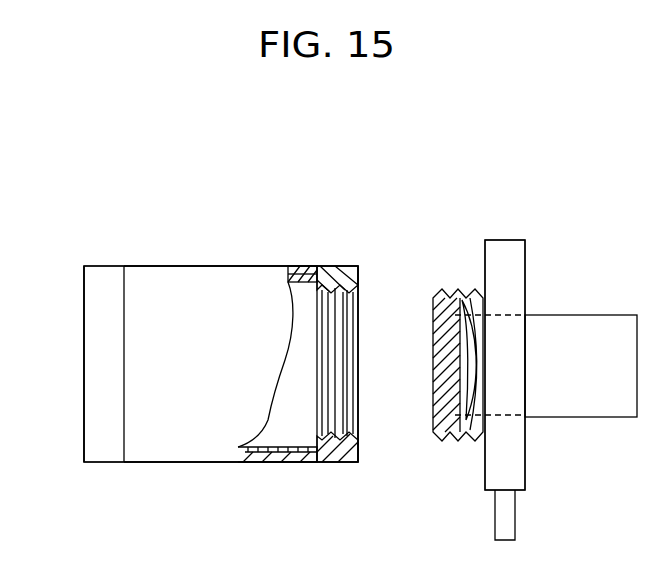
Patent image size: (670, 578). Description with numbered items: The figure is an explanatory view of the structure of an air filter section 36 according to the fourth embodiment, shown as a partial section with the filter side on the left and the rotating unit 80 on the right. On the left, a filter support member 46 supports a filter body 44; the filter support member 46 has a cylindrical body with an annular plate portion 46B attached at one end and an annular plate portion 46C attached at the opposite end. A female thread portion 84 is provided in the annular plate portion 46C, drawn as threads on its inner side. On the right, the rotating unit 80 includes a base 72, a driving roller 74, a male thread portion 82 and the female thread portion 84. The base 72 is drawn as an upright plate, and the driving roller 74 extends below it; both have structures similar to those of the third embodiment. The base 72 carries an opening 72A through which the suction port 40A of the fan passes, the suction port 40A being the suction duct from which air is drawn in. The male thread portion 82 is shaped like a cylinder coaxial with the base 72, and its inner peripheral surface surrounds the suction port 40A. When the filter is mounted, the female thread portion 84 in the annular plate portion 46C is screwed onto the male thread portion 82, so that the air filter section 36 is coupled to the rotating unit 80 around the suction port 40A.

The air filter section 36 is at (283, 186).
The filter body 44 is at (205, 272).
The filter support member 46 is at (84, 352).
The annular plate portion 46B is at (101, 270).
The annular plate portion 46C is at (336, 266).
The female thread portion 84 is at (340, 307).
The rotating unit 80 is at (515, 178).
The base 72 is at (495, 245).
The plate opening 72A is at (516, 318).
The suction port 40A is at (620, 317).
The driving roller 74 is at (502, 518).
The male thread portion 82 is at (455, 294).